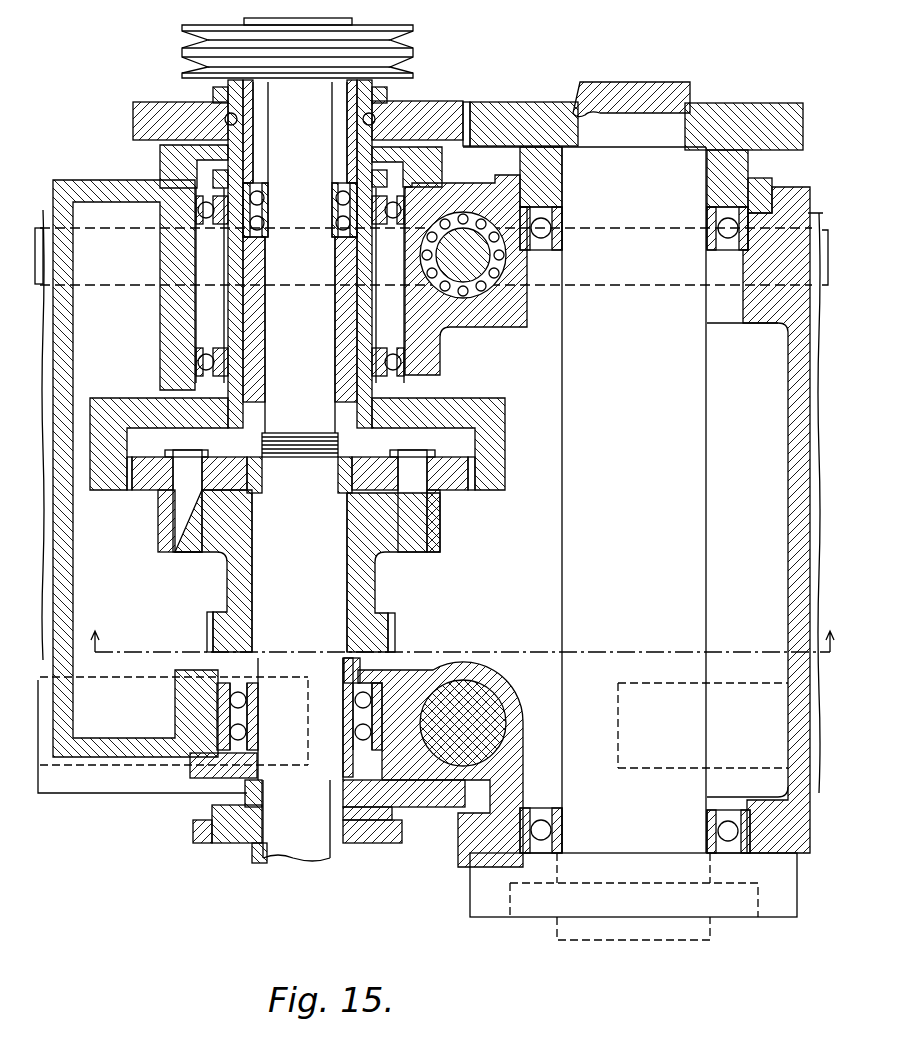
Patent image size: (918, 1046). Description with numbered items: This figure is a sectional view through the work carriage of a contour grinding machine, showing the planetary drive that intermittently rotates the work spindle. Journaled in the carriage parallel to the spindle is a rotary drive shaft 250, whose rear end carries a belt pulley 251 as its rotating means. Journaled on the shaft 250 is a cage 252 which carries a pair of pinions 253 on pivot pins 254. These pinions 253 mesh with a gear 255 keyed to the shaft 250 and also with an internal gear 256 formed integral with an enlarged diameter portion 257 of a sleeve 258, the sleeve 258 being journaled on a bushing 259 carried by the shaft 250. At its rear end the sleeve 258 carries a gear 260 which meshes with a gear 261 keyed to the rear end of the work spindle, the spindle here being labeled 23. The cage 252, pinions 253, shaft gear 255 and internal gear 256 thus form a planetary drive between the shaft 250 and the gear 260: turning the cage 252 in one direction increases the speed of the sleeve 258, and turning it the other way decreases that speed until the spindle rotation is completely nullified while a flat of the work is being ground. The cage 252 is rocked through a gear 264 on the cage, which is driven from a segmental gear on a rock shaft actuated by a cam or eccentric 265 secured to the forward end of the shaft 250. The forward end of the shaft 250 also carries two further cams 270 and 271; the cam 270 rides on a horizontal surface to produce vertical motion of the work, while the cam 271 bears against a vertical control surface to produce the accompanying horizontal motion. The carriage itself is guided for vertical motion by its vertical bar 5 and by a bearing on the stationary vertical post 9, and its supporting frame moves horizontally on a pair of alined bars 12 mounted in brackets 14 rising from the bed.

The belt pulley 251 is at (413, 50).
The gear 260 is at (432, 104).
The gear 261 is at (542, 100).
The stationary vertical post 9 is at (467, 277).
The bushing 259 is at (262, 337).
The sleeve 258 is at (350, 343).
The spindle 23 is at (700, 432).
The enlarged diameter portion 257 is at (505, 413).
The internal gear 256 is at (478, 476).
The pinions 253 is at (152, 490).
The pivot pins 254 is at (185, 530).
The gear 255 is at (250, 483).
The rotary drive shaft 250 is at (297, 581).
The cage 252 is at (366, 598).
The gear 264 is at (395, 638).
The bars 12 is at (287, 683).
The vertical bar 5 is at (475, 697).
The brackets 14 is at (462, 639).
The cam or eccentric 265 is at (195, 833).
The cam or eccentric 271 is at (230, 813).
The cam or eccentric 270 is at (430, 805).